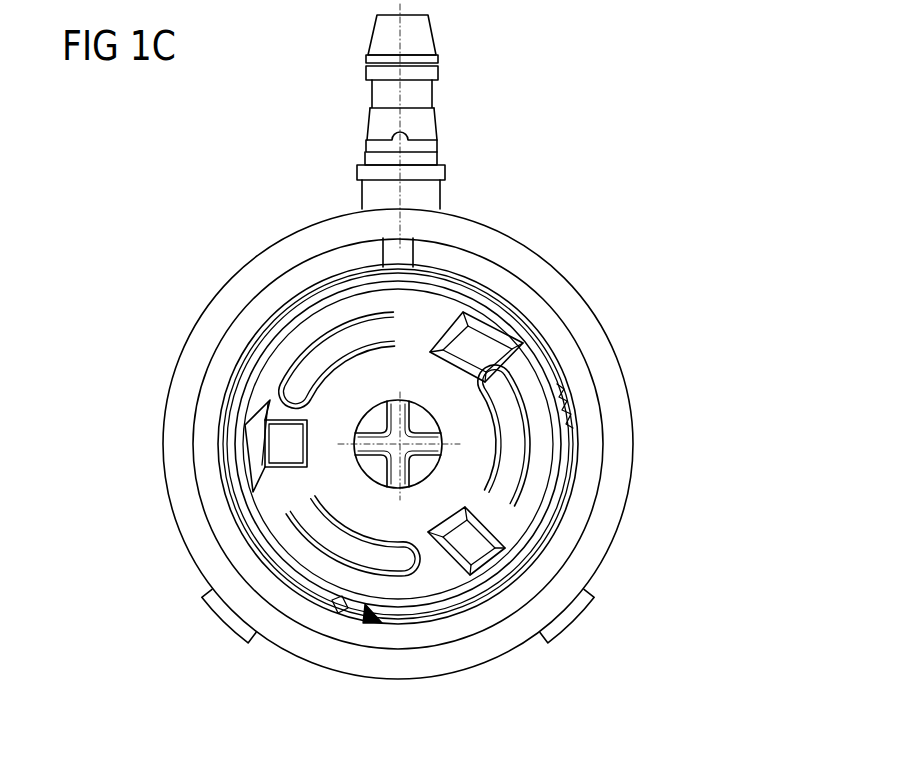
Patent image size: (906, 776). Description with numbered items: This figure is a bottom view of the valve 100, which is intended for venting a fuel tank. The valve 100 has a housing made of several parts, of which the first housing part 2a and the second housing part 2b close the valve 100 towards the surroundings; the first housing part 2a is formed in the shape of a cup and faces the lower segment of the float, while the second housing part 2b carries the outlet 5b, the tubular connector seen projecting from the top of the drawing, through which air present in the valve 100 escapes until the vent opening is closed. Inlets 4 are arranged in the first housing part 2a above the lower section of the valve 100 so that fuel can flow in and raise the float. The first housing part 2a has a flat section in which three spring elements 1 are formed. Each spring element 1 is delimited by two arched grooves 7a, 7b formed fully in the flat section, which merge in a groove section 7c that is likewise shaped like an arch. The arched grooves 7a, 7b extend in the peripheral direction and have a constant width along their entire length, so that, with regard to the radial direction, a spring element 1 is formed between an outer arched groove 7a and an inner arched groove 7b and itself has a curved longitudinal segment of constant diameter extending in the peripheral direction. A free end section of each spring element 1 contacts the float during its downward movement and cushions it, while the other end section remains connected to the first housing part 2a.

The valve 100 is at (642, 118).
The spring element 1 is at (360, 555).
The first housing part 2a is at (585, 392).
The second housing part 2b is at (500, 246).
The inlet 4 is at (283, 445).
The outlet 5b is at (413, 33).
The outer arched groove 7a is at (530, 441).
The inner arched groove 7b is at (497, 470).
The groove section 7c is at (506, 376).